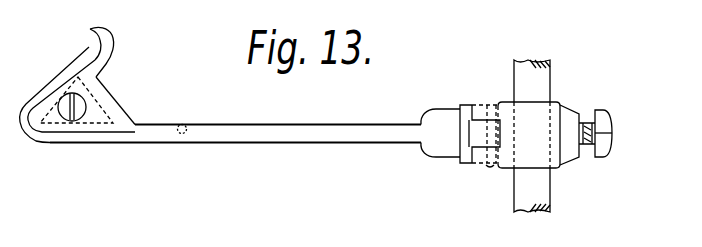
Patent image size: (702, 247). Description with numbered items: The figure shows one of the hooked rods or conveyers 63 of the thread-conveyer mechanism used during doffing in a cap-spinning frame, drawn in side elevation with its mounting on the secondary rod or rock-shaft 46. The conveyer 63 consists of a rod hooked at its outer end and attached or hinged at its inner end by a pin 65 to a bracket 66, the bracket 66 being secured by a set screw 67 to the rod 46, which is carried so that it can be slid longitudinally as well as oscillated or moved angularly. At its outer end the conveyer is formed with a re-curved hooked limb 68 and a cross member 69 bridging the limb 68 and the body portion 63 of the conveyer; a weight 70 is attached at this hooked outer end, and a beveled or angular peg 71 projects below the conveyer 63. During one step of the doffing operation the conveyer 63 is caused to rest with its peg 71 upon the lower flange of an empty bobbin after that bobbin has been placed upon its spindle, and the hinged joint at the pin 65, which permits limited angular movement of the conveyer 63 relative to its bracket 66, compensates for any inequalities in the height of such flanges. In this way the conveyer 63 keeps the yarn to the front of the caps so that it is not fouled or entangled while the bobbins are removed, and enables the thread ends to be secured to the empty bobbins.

The secondary rod or rock-shaft 46 is at (537, 83).
The hooked rod or conveyer 63 is at (300, 141).
The pin 65 is at (492, 104).
The bracket 66 is at (538, 135).
The set screw 67 is at (612, 124).
The re-curved hooked limb 68 is at (96, 50).
The cross member 69 is at (110, 103).
The weight 70 is at (53, 118).
The beveled or angular peg 71 is at (185, 125).